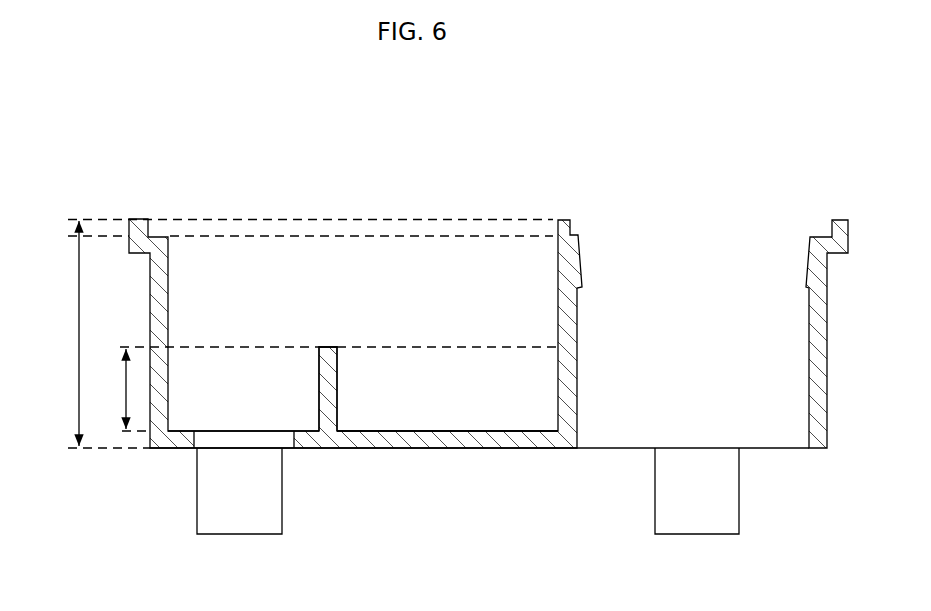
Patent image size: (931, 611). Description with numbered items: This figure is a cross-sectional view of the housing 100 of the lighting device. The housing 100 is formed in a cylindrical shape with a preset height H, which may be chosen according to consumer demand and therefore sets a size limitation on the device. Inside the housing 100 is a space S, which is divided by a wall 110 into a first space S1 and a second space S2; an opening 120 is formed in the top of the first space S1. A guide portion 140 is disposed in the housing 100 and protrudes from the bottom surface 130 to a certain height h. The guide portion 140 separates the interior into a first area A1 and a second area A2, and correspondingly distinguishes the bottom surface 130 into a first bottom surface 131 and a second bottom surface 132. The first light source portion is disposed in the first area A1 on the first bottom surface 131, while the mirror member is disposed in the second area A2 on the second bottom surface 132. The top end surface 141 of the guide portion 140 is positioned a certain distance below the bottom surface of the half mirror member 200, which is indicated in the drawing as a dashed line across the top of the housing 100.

The housing 100 is at (73, 118).
The wall 110 is at (569, 221).
The opening 120 is at (303, 229).
The half mirror member 200 is at (205, 217).
The bottom surface 130 is at (363, 495).
The first bottom surface 131 is at (320, 430).
The second bottom surface 132 is at (362, 433).
The guide portion 140 is at (337, 372).
The top end surface 141 is at (327, 341).
The first area A1 is at (213, 398).
The second area A2 is at (456, 398).
The space S is at (568, 431).
The first space S1 is at (504, 281).
The second space S2 is at (598, 361).
The height H is at (105, 334).
The height h is at (128, 390).